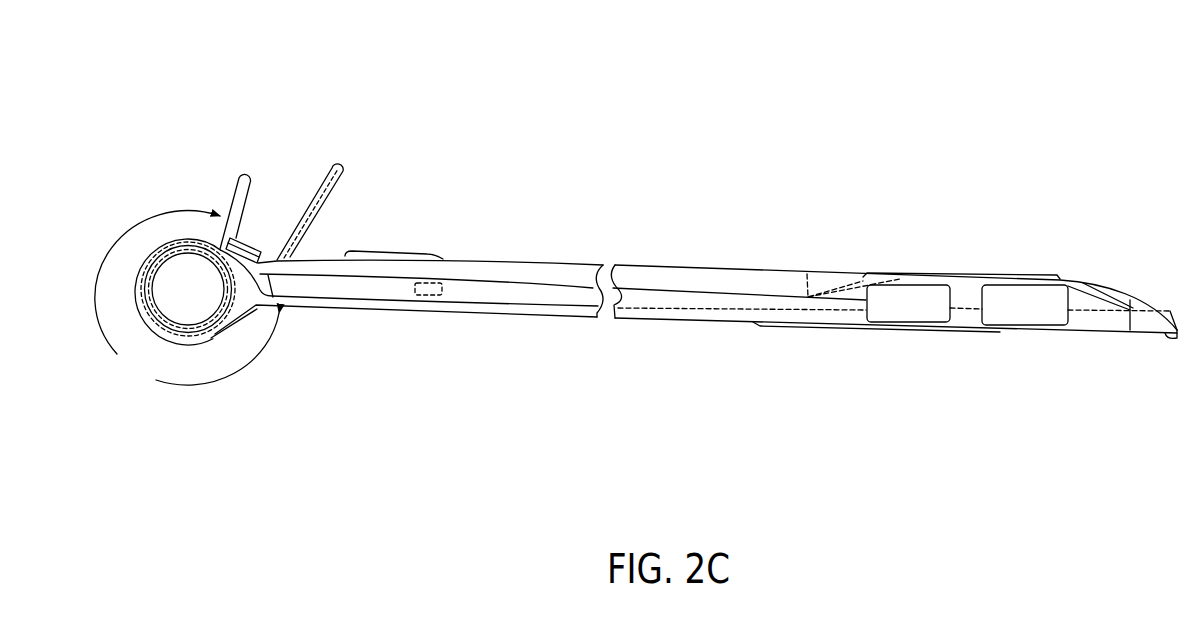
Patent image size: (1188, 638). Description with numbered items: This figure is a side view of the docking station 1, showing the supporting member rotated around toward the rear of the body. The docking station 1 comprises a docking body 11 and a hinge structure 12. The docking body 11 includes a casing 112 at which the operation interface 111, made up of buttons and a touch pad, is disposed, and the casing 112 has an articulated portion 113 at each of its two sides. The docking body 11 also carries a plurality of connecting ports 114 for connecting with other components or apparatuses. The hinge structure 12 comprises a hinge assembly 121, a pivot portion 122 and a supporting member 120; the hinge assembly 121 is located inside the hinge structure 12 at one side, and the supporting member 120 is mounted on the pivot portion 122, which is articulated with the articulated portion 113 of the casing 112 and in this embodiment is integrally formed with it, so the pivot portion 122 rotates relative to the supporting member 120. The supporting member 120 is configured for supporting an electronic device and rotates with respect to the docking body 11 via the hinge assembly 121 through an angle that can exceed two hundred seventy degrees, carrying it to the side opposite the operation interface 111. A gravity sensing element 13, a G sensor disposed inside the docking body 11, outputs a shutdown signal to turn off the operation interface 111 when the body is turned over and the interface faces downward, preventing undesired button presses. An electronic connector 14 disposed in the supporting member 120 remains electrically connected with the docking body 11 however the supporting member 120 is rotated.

The docking station 1 is at (710, 86).
The docking body 11 is at (489, 318).
The operation interface 111 is at (687, 336).
The casing 112 is at (692, 278).
The articulated portion 113 is at (185, 242).
The connecting ports 114 is at (1021, 313).
The hinge structure 12 is at (163, 246).
The supporting member 120 is at (243, 173).
The hinge assembly 121 is at (240, 323).
The pivot portion 122 is at (188, 305).
The gravity sensing element 13 is at (437, 281).
The electronic connector 14 is at (253, 250).